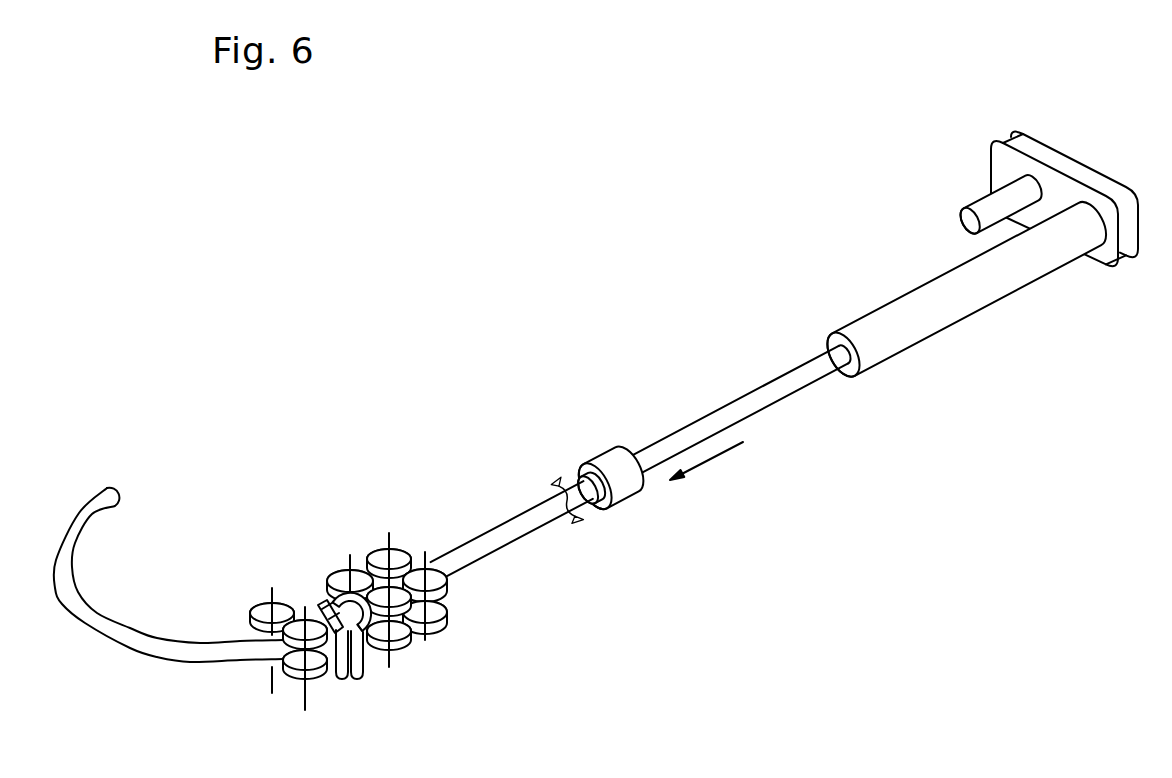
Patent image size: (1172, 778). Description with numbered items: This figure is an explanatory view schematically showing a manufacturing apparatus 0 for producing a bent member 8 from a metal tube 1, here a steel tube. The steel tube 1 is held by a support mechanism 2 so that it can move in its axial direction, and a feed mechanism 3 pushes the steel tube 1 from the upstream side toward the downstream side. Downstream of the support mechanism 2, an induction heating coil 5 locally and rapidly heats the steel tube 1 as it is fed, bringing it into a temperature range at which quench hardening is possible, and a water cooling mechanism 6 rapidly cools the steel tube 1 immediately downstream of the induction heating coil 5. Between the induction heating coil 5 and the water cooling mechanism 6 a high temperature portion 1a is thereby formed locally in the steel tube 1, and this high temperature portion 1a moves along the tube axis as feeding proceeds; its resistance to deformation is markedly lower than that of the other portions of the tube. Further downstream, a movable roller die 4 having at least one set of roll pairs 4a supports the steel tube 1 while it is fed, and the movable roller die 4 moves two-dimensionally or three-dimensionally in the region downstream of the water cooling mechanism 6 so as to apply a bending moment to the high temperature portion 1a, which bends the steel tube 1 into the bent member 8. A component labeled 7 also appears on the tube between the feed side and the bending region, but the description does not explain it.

The manufacturing apparatus 0 is at (584, 610).
The metal tube 1 is at (485, 538).
The high temperature portion 1a is at (327, 602).
The support mechanism 2 is at (352, 572).
The feed mechanism 3 is at (875, 316).
The movable roller die 4 is at (190, 574).
The roll pairs 4a is at (190, 574).
The induction heating coil 5 is at (353, 679).
The water cooling mechanism 6 is at (365, 635).
The stopper 7 is at (605, 462).
The bent member 8 is at (108, 492).